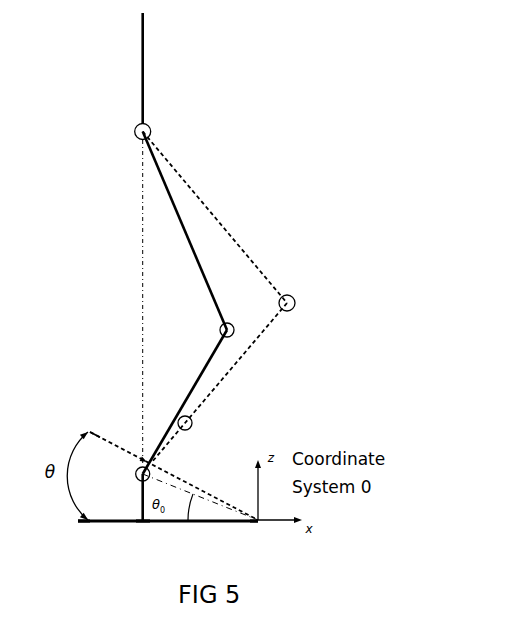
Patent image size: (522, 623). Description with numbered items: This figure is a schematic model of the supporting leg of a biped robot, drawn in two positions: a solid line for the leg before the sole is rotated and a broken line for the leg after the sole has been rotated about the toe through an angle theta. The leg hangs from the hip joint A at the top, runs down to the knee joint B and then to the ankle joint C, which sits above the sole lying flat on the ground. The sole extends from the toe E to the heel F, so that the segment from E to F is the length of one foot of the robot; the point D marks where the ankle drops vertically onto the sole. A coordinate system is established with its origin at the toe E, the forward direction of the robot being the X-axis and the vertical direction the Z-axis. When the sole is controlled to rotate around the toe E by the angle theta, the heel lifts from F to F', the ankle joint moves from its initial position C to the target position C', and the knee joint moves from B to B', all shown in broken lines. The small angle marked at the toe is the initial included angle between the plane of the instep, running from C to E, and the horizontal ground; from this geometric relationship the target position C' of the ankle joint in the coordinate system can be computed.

The hip joint A is at (128, 130).
The knee joint initial position B is at (213, 330).
The knee joint target position B' is at (297, 302).
The ankle joint initial position C is at (130, 475).
The ankle joint target position C' is at (195, 429).
The foot ankle contact point D is at (143, 534).
The toe E is at (259, 530).
The heel end of sole F is at (74, 532).
The rotated heel position F' is at (102, 419).